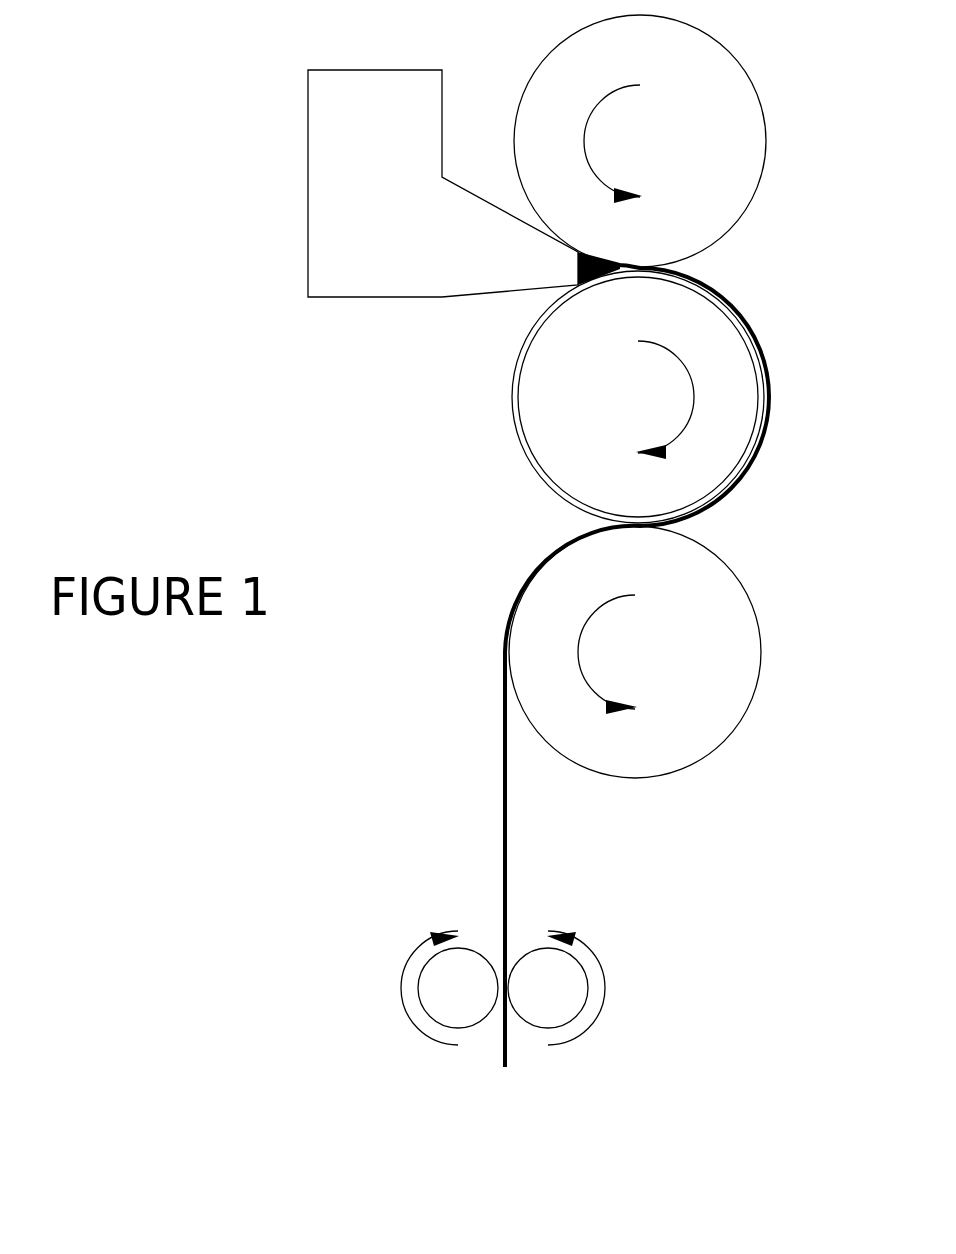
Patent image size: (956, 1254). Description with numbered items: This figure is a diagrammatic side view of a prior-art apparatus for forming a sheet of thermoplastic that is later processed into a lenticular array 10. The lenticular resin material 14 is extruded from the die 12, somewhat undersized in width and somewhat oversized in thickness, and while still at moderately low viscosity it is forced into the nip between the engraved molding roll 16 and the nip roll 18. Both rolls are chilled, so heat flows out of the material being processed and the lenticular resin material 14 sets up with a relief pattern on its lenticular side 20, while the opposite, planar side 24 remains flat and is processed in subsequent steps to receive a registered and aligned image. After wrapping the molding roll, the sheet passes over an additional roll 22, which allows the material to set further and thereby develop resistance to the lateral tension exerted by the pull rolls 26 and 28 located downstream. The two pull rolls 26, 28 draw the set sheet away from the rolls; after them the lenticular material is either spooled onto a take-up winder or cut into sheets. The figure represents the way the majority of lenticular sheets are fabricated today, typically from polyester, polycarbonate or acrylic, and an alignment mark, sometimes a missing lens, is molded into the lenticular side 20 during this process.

The lenticular array 10 is at (352, 428).
The die 12 is at (395, 242).
The lenticular resin material 14 is at (614, 266).
The engraved molding roll 16 is at (638, 397).
The nip roll 18 is at (640, 142).
The lenticular side 20 is at (503, 825).
The additional roll 22 is at (635, 652).
The planar side 24 is at (505, 870).
The pull roll 26 is at (548, 988).
The pull roll 28 is at (458, 988).